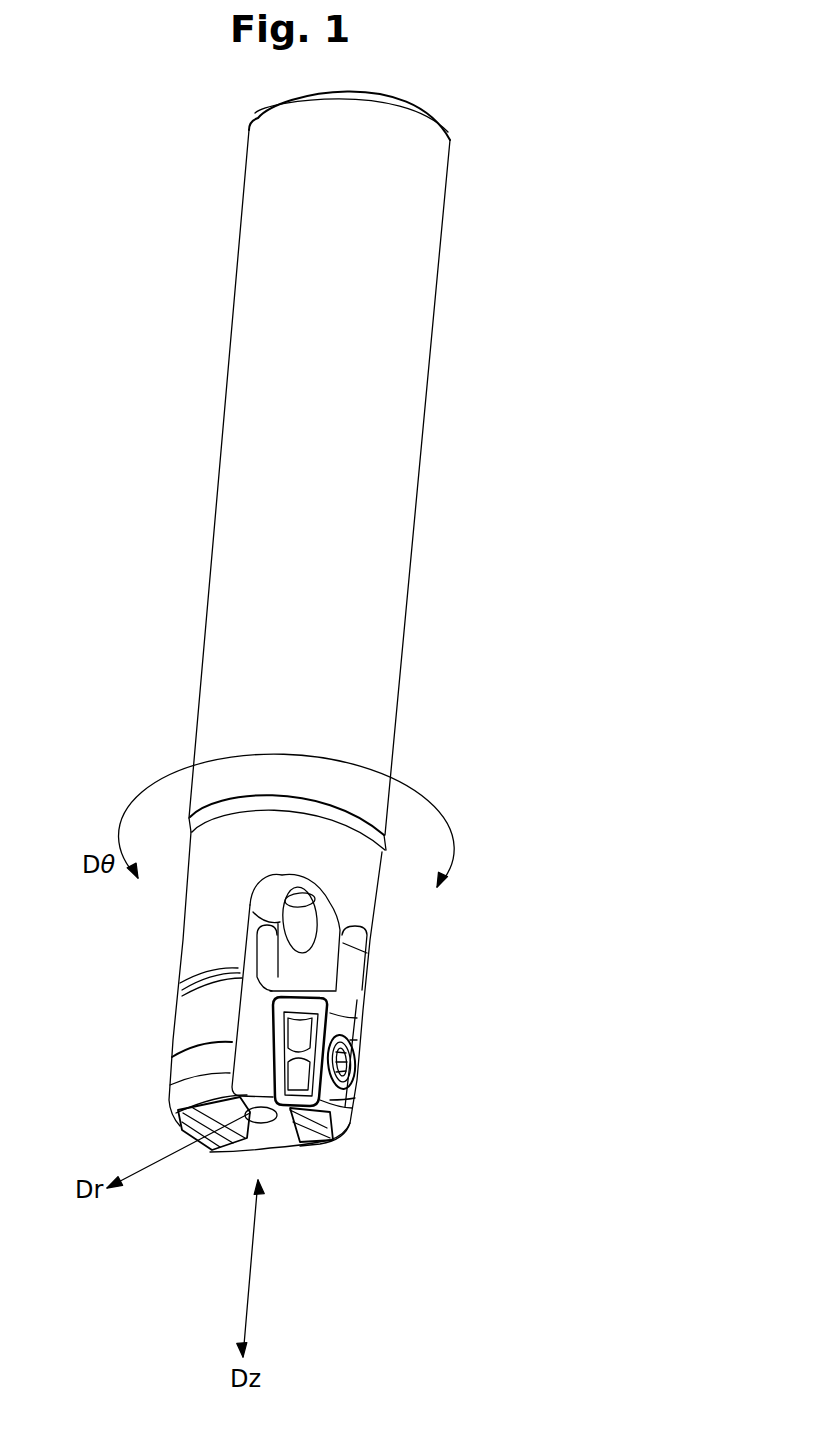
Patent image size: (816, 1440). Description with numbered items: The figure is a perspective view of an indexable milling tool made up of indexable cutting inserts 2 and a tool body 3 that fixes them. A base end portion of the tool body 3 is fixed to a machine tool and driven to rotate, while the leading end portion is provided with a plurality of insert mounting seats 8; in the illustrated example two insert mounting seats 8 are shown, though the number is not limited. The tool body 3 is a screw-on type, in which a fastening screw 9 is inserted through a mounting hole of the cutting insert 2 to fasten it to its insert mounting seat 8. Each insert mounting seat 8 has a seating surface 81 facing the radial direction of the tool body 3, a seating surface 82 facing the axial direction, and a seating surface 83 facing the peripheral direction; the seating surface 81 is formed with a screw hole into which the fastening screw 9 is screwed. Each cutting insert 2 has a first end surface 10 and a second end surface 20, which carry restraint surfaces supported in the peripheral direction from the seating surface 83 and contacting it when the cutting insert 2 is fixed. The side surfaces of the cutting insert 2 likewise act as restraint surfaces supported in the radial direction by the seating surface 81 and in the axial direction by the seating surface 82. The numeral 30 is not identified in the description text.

The tool body 3 is at (208, 547).
The insert mounting seat 8 is at (180, 1130).
The chip flute 30 is at (347, 1020).
The first end surface 10 is at (288, 1120).
The fastening screw 9 is at (360, 1065).
The seating surface 82 is at (347, 1024).
The seating surface 81 is at (362, 1050).
The seating surface 83 is at (357, 1100).
The second end surface 20 is at (366, 1115).
The cutting insert 2 is at (207, 1158).